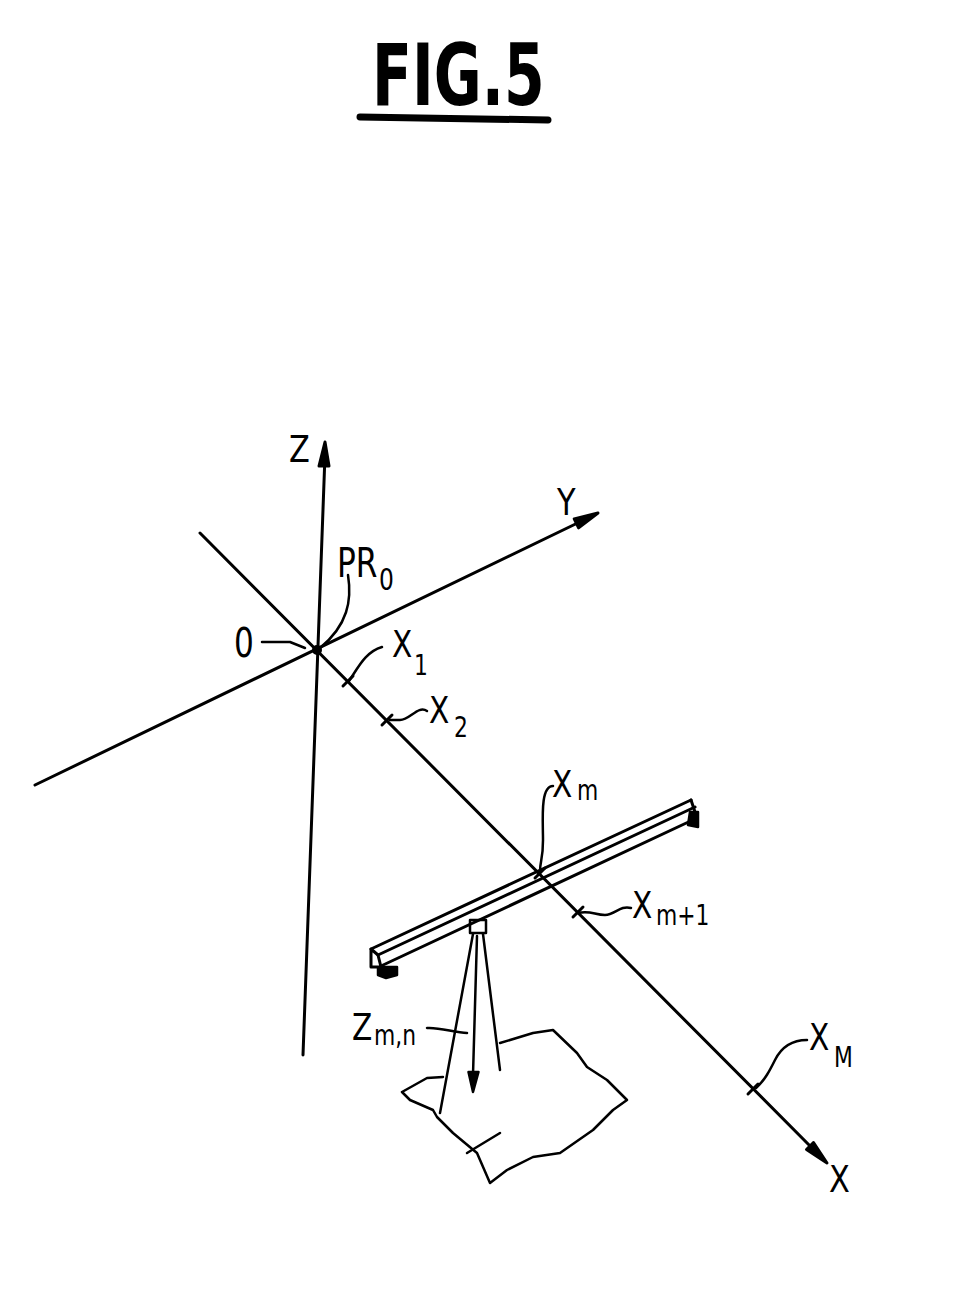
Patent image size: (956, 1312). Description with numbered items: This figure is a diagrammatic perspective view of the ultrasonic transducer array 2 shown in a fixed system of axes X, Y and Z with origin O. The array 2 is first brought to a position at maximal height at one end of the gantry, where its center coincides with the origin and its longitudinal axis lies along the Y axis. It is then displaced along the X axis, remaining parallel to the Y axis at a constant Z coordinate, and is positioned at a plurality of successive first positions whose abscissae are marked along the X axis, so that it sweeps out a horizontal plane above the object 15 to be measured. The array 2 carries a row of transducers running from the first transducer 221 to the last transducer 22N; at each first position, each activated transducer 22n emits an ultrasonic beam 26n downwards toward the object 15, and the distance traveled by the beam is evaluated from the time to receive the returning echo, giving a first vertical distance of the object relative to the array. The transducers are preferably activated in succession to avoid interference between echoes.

The array 2 is at (668, 803).
The transducer 221 is at (383, 973).
The transducer 22n is at (493, 933).
The transducer 22N is at (697, 825).
The ultrasonic beam 26n is at (497, 1043).
The object 15 is at (473, 1150).